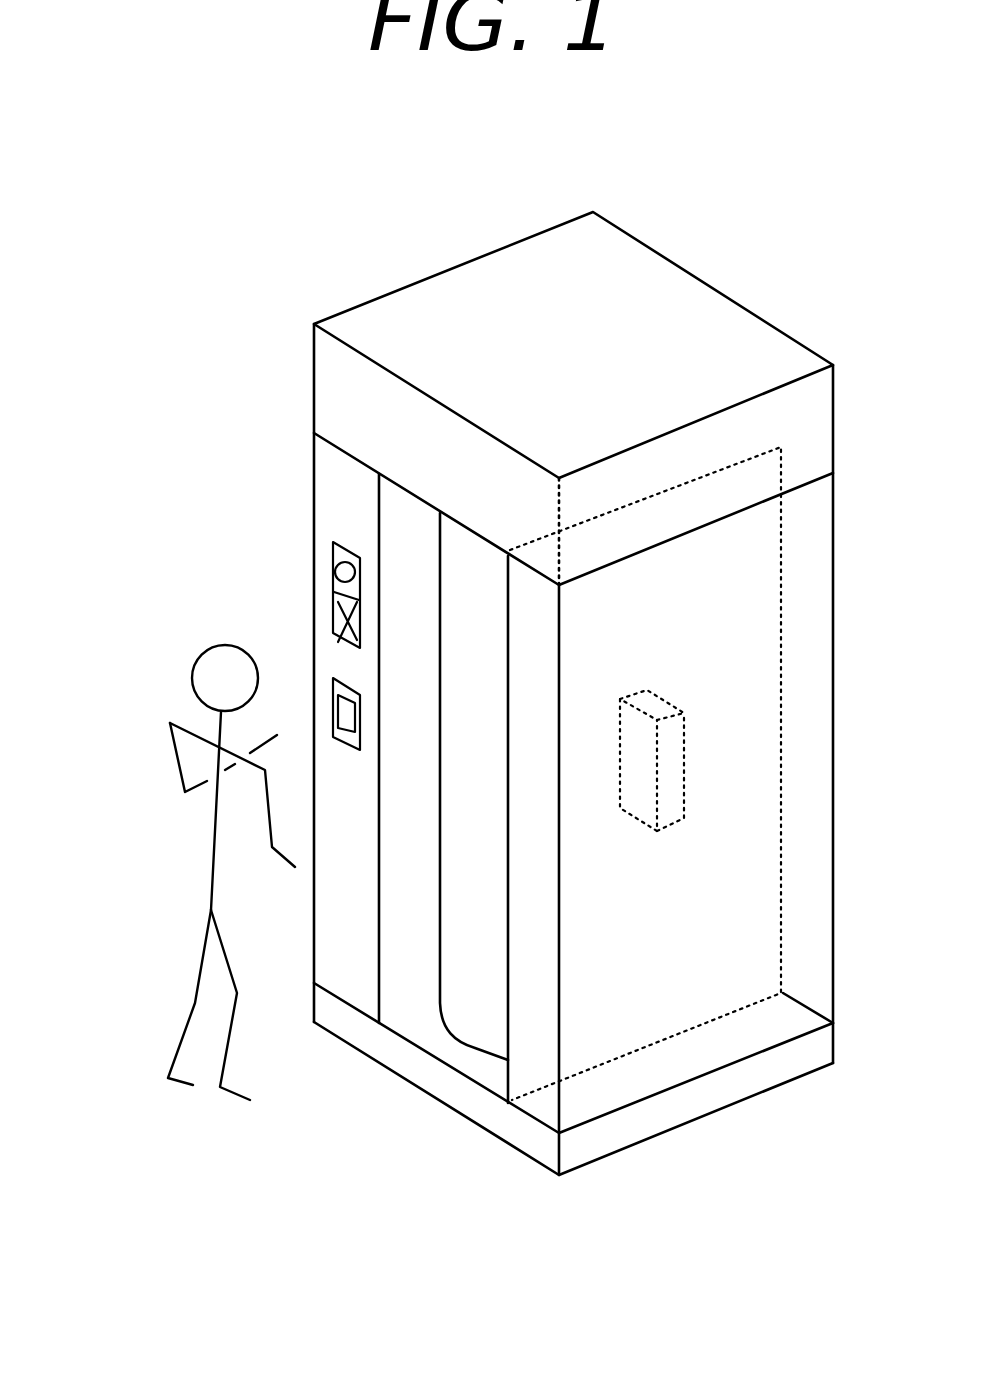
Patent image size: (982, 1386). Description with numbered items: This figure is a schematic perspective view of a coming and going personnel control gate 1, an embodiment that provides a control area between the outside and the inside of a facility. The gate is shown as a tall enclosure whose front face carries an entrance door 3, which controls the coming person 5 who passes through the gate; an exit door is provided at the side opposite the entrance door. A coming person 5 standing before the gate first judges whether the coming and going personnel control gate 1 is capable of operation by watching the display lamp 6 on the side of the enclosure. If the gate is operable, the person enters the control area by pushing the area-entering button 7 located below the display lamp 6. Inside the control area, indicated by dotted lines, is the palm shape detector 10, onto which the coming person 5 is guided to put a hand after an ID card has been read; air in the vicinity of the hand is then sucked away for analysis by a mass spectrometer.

The coming and going personnel control gate 1 is at (393, 310).
The entrance door 3 is at (487, 998).
The coming person 5 is at (198, 653).
The display lamp 6 is at (325, 563).
The area-entering button 7 is at (330, 703).
The palm shape detector 10 is at (672, 740).